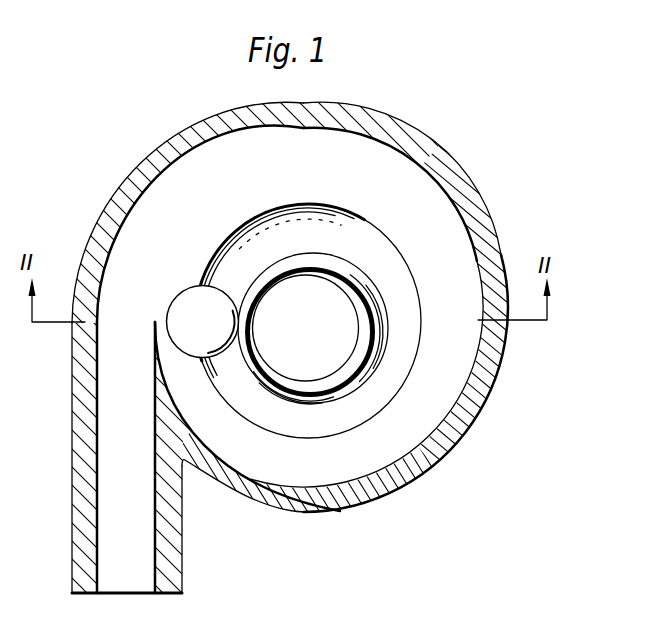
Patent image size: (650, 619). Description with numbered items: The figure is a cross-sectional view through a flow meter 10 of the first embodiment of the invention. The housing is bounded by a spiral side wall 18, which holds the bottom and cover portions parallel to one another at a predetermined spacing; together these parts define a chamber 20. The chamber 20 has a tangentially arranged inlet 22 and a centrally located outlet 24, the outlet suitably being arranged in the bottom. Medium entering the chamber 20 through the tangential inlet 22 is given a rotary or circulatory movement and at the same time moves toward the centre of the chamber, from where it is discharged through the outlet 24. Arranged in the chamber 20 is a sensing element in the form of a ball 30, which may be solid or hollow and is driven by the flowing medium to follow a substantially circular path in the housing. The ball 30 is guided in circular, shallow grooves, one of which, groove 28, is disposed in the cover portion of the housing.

The flow meter 10 is at (476, 171).
The spiral side wall 18 is at (481, 252).
The chamber 20 is at (171, 200).
The tangentially arranged inlet 22 is at (118, 495).
The centrally located outlet 24 is at (314, 350).
The circular shallow groove 28 is at (398, 360).
The ball 30 is at (195, 302).